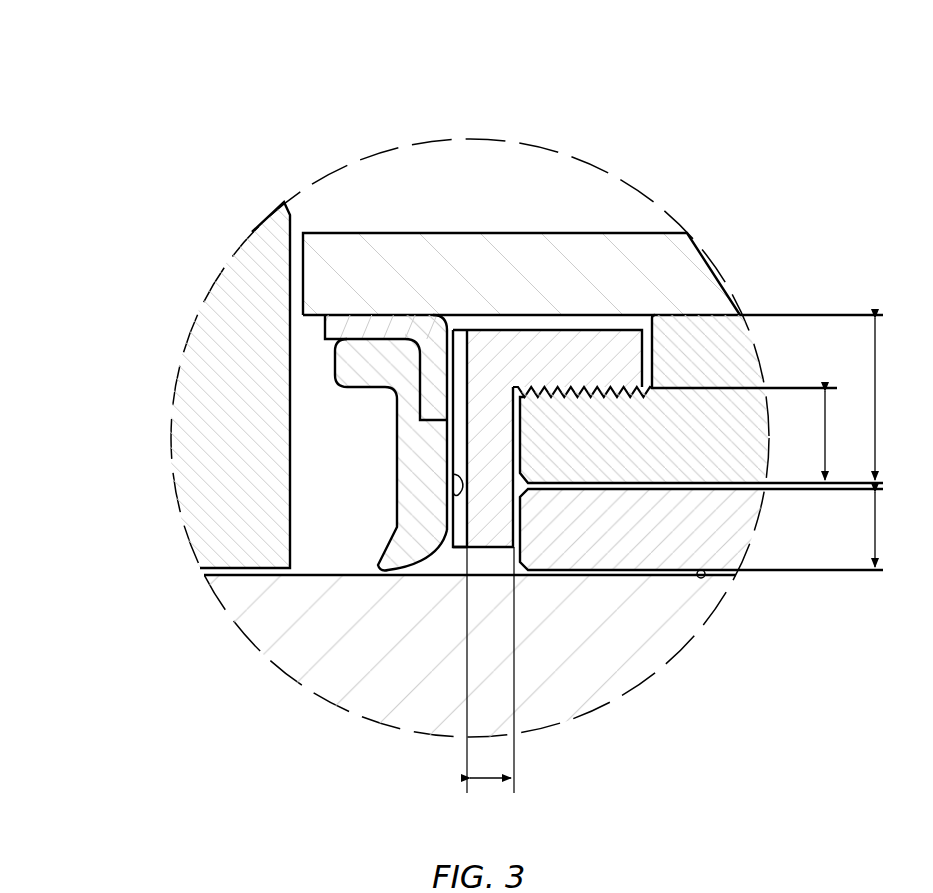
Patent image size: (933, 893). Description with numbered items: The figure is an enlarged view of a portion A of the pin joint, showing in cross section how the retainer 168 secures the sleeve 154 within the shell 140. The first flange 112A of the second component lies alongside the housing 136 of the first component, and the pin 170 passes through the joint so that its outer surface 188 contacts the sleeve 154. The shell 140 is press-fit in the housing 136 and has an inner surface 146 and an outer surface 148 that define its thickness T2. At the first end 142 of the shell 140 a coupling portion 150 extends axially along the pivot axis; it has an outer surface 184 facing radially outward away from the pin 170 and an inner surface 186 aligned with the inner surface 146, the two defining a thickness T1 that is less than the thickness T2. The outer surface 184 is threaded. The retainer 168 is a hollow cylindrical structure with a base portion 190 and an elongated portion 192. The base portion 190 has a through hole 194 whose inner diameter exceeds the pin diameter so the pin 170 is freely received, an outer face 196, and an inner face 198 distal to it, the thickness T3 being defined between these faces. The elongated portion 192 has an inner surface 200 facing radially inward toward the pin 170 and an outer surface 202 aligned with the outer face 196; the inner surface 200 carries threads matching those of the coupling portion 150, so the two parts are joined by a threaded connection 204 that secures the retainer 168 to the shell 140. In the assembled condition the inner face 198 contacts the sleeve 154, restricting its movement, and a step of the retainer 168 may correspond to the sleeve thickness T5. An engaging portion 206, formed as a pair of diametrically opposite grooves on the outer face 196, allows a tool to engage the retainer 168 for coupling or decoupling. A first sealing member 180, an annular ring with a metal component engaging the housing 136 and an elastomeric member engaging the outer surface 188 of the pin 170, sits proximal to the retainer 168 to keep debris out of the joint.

The portion A is at (318, 178).
The first flange 112A is at (190, 463).
The housing 136 is at (385, 245).
The shell 140 is at (737, 357).
The first end 142 is at (655, 308).
The inner surface 146 is at (710, 485).
The outer surface 148 is at (722, 316).
The coupling portion 150 is at (580, 443).
The sleeve 154 is at (717, 535).
The retainer 168 is at (364, 315).
The pin 170 is at (288, 655).
The first sealing member 180 is at (353, 358).
The outer surface 184 is at (618, 385).
The inner surface 186 is at (597, 483).
The outer surface 188 is at (704, 578).
The base portion 190 is at (487, 518).
The elongated portion 192 is at (535, 350).
The through hole 194 is at (457, 563).
The outer face 196 is at (470, 440).
The inner face 198 is at (528, 490).
The inner surface 200 is at (548, 392).
The outer surface 202 is at (493, 328).
The threaded connection 204 is at (524, 384).
The engaging portion 206 is at (452, 474).
The thickness T1 is at (825, 435).
The thickness T2 is at (875, 399).
The thickness T3 is at (490, 780).
The thickness T5 is at (875, 529).